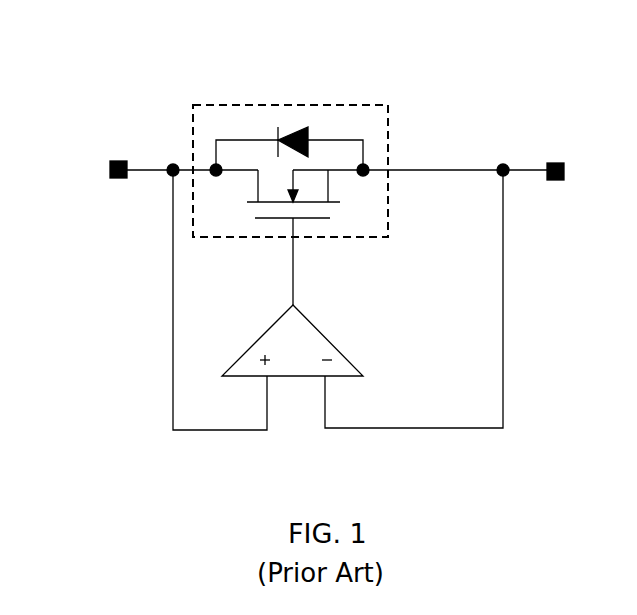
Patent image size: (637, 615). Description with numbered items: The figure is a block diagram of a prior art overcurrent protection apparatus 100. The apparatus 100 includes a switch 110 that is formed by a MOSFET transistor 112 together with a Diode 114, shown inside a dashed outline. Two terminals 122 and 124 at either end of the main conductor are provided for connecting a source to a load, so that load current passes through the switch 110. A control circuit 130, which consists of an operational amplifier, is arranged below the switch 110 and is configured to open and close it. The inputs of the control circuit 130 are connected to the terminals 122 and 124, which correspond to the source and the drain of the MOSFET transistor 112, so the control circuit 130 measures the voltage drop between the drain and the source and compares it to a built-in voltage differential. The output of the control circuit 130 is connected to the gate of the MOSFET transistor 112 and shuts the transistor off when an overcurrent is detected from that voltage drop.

The overcurrent protection apparatus 100 is at (36, 43).
The switch 110 is at (232, 105).
The MOSFET transistor 112 is at (310, 218).
The Diode 114 is at (308, 128).
The terminal 122 is at (553, 163).
The terminal 124 is at (116, 160).
The control circuit 130 is at (228, 368).